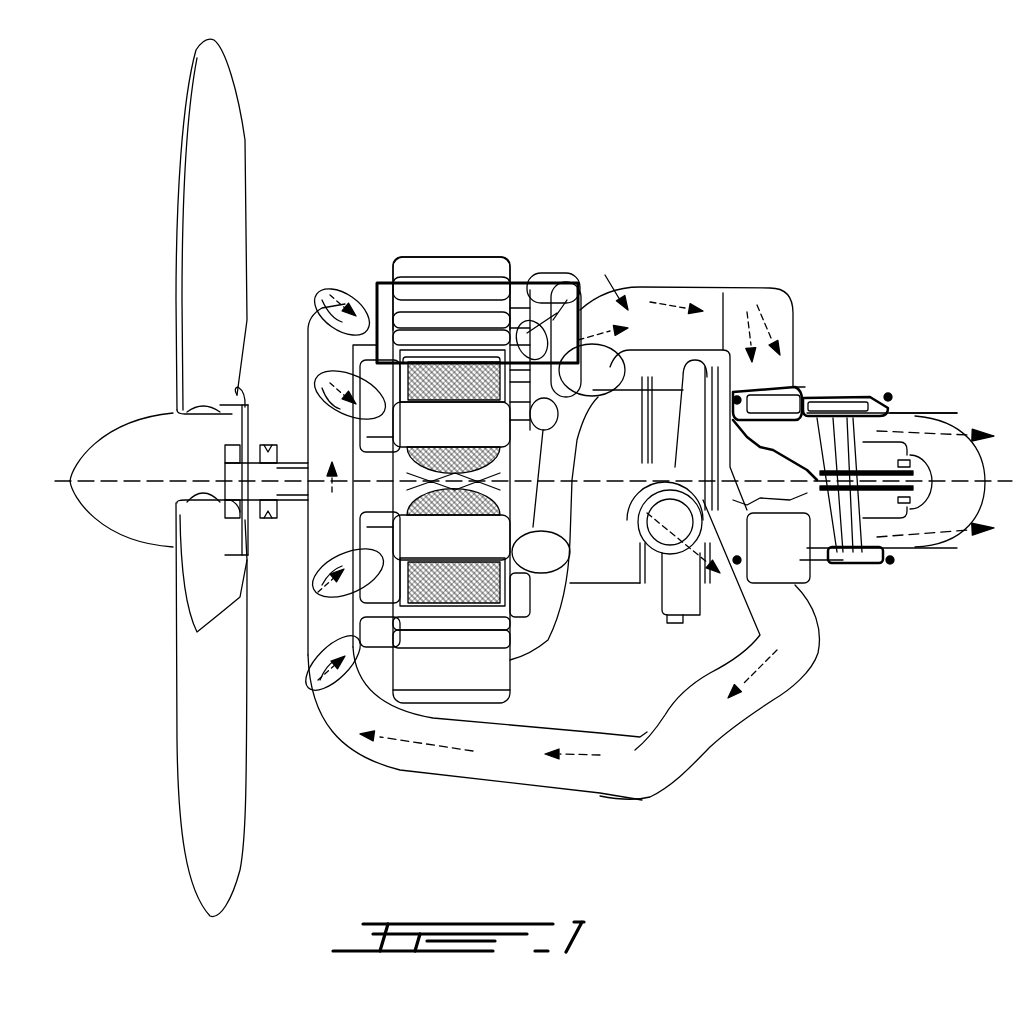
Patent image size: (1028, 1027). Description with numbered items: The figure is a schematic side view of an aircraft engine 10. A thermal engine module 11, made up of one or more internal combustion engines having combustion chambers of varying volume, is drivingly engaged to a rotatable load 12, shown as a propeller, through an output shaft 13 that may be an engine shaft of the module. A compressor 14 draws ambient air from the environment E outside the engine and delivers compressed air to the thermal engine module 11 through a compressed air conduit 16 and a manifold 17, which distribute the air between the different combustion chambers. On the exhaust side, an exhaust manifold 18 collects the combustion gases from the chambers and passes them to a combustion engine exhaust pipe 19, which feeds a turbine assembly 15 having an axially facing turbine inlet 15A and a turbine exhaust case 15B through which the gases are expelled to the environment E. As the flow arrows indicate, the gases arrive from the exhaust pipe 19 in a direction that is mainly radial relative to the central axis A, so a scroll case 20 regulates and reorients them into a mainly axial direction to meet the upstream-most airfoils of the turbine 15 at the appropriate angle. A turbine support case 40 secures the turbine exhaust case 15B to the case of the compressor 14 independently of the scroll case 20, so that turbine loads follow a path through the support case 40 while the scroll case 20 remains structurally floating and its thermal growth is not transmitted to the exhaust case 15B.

The aircraft engine 10 is at (740, 99).
The thermal engine module 11 is at (477, 576).
The rotatable load 12 is at (228, 138).
The output shaft 13 is at (270, 437).
The compressor 14 is at (618, 563).
The turbine assembly 15 is at (863, 559).
The turbine inlet 15A is at (803, 393).
The turbine exhaust case 15B is at (943, 414).
The compressed air conduit 16 is at (703, 733).
The manifold 17 is at (327, 333).
The exhaust manifold 18 is at (542, 623).
The combustion engine exhaust pipe 19 is at (625, 292).
The scroll case 20 is at (747, 360).
The turbine support case 40 is at (823, 423).
The central axis A is at (120, 483).
The environment E is at (916, 138).